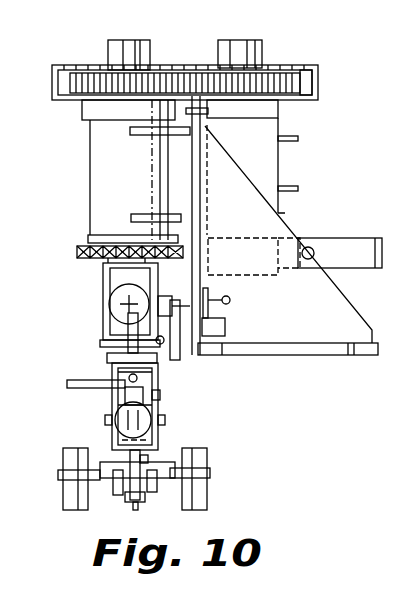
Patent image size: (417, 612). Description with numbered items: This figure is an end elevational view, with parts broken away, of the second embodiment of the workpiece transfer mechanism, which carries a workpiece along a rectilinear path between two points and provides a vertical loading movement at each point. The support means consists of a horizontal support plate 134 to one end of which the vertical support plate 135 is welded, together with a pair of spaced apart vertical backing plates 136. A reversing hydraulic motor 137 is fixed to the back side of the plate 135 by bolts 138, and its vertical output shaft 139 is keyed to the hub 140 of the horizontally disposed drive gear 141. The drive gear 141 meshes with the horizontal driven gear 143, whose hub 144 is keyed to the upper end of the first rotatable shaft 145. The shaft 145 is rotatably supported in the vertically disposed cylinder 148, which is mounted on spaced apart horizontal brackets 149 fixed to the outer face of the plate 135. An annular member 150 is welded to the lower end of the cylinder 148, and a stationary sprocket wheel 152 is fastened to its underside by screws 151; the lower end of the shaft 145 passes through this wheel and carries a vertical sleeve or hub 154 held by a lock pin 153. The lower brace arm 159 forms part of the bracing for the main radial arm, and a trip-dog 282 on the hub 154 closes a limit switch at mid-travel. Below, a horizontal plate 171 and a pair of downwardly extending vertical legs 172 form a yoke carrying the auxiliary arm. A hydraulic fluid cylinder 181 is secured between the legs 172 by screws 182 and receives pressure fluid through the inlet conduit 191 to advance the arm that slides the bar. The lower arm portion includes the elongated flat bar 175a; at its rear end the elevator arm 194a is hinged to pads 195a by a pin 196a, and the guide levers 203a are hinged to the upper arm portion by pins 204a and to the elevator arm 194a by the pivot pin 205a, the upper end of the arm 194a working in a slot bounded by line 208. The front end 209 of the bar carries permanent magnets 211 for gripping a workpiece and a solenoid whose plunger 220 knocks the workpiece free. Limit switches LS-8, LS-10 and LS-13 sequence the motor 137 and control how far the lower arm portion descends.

The horizontal support plate 134 is at (262, 348).
The vertical support plate 135 is at (190, 176).
The vertical backing plates 136 is at (330, 292).
The reversing hydraulic motor 137 is at (278, 122).
The bolts 138 is at (186, 111).
The vertical output shaft 139 is at (243, 40).
The hub 140 is at (262, 48).
The drive gear 141 is at (300, 80).
The driven gear 143 is at (80, 82).
The hub 144 is at (150, 50).
The first rotatable shaft 145 is at (135, 40).
The cylinder 148 is at (90, 148).
The horizontal brackets 149 is at (148, 135).
The annular member 150 is at (88, 238).
The screws 151 is at (103, 263).
The stationary sprocket wheel 152 is at (108, 266).
The lock pin 153 is at (110, 307).
The vertical sleeve or hub 154 is at (105, 328).
The lower brace arm 159 is at (175, 306).
The horizontal plate 171 is at (108, 358).
The vertical legs 172 is at (117, 370).
The elongated flat bar 175a is at (118, 480).
The hydraulic fluid cylinder 181 is at (125, 392).
The screws 182 is at (160, 395).
The inlet conduit 191 is at (75, 383).
The elevator arm 194a is at (140, 460).
The pads 195a is at (130, 502).
The pin 196a is at (150, 480).
The guide levers 203a is at (112, 440).
The pins 204a is at (105, 423).
The pivot pin 205a is at (165, 452).
The slot boundary line 208 is at (130, 458).
The front end (crosshead part) 209 is at (208, 468).
The permanent magnets 211 is at (63, 485).
The solenoid plunger 220 is at (138, 506).
The trip-dog 282 is at (108, 345).
The limit switch LS-8 is at (112, 415).
The limit switch LS-10 is at (185, 372).
The limit switch LS-13 is at (225, 330).